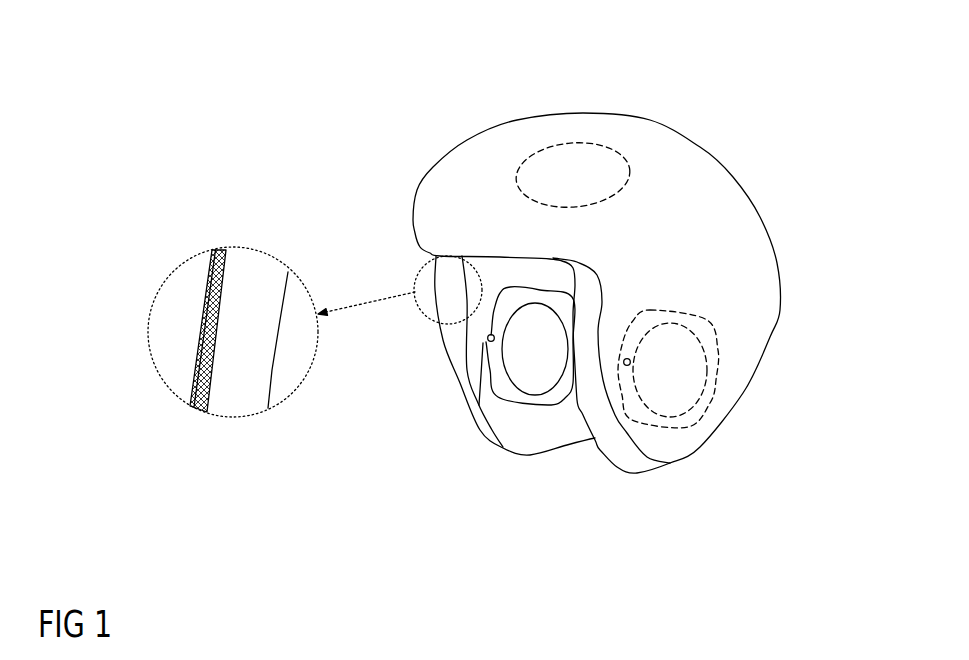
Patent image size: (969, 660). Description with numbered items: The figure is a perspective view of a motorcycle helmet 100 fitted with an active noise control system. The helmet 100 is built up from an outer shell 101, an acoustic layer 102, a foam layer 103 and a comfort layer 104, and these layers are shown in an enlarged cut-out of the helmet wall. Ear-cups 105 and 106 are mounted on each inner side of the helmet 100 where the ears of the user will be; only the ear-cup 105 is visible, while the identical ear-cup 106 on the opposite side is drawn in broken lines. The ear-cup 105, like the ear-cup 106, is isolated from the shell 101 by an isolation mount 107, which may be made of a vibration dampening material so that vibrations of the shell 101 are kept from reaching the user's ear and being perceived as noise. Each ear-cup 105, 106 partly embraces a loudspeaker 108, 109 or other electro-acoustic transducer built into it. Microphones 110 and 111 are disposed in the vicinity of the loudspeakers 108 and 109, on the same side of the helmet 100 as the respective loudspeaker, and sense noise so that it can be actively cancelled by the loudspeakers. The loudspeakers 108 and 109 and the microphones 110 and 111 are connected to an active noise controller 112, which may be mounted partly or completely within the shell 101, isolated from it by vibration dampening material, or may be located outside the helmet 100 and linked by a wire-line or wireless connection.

The motorcycle helmet 100 is at (758, 118).
The outer shell 101 is at (727, 213).
The acoustic layer 102 is at (197, 358).
The foam layer 103 is at (247, 290).
The comfort layer 104 is at (560, 423).
The ear-cup 105 is at (482, 347).
The ear-cup 106 is at (700, 402).
The isolation mount 107 is at (484, 328).
The loudspeaker 108 is at (515, 372).
The loudspeaker 109 is at (673, 375).
The microphone 110 is at (489, 333).
The microphone 111 is at (628, 358).
The active noise controller 112 is at (580, 167).